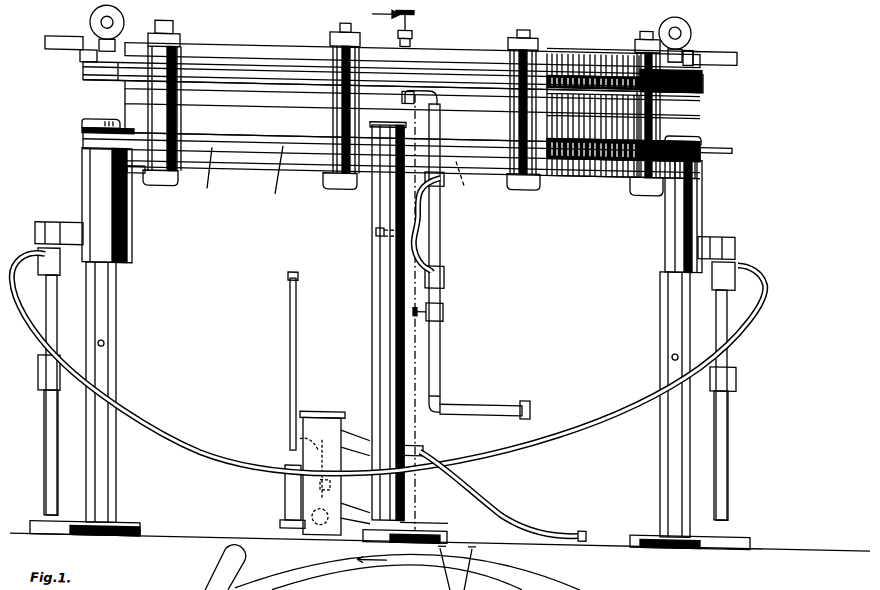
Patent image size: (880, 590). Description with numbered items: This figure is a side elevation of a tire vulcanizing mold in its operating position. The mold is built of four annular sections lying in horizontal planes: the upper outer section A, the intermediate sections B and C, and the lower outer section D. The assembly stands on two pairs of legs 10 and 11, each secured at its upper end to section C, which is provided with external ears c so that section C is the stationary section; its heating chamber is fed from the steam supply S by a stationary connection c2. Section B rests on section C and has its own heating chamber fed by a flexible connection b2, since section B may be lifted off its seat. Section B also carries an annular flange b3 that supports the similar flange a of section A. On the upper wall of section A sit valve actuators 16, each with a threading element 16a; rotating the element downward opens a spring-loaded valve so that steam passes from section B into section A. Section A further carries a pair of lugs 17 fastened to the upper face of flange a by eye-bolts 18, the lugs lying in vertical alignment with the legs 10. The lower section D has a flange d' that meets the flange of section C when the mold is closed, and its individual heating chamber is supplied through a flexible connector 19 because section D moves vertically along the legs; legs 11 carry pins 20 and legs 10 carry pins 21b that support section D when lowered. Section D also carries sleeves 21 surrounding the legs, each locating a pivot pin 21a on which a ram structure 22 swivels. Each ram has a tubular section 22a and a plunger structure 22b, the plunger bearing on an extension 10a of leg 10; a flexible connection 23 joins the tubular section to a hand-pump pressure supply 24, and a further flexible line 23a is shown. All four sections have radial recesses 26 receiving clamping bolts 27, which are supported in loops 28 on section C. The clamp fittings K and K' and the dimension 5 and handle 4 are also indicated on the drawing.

The valve handle 4 is at (378, 16).
The dimension 5 is at (377, 562).
The leg 10 is at (117, 305).
The leg extension 10a is at (34, 520).
The leg 11 is at (372, 293).
The valve actuator 16 is at (416, 32).
The threading element 16a is at (420, 11).
The lug 17 is at (61, 35).
The eye-bolt 18 is at (90, 15).
The flexible connector 19 is at (434, 223).
The pin 20 is at (376, 228).
The sleeve 21 is at (125, 222).
The pivot pin 21a is at (38, 231).
The pin 21b is at (105, 342).
The ram structure 22 is at (42, 355).
The tubular section 22a is at (48, 323).
The plunger structure 22b is at (44, 440).
The flexible connection 23 is at (179, 432).
The drain hose 23a is at (488, 510).
The source of fluid pressure supply 24 is at (314, 411).
The radial recess 26 is at (306, 54).
The clamping bolt 27 is at (174, 19).
The loop 28 is at (80, 134).
The upper mold section A is at (255, 45).
The intermediate mold section B is at (412, 115).
The stationary mold section C is at (412, 128).
The lower mold section D is at (245, 146).
The clamp K is at (30, 285).
The clamp K prime K' is at (741, 303).
The steam supply S is at (444, 348).
The annular flange a is at (83, 64).
The flexible connection b2 is at (425, 83).
The annular flange b3 is at (83, 77).
The ear c is at (203, 173).
The stationary connection c2 is at (464, 181).
The flange d' is at (272, 175).